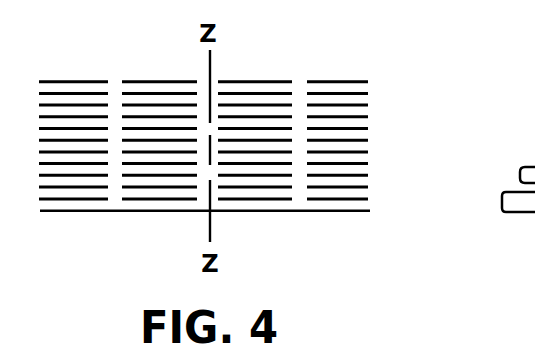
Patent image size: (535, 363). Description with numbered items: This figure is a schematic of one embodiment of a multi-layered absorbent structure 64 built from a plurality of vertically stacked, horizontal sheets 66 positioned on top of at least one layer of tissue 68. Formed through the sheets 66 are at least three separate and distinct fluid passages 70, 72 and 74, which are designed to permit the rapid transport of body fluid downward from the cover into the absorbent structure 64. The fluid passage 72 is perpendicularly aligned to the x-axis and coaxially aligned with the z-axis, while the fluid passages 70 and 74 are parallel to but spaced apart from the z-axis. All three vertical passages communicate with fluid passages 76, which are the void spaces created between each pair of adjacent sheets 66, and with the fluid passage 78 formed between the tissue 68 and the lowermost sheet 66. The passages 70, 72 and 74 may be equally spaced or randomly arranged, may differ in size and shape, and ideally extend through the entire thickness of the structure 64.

The multi-layered absorbent structure 64 is at (253, 136).
The vertically stacked, horizontal sheets 66 is at (367, 81).
The layer of tissue 68 is at (313, 211).
The fluid passage 70 is at (117, 88).
The fluid passage 72 is at (215, 90).
The fluid passage 74 is at (298, 93).
The fluid passages 76 is at (367, 146).
The fluid passage 78 is at (362, 203).